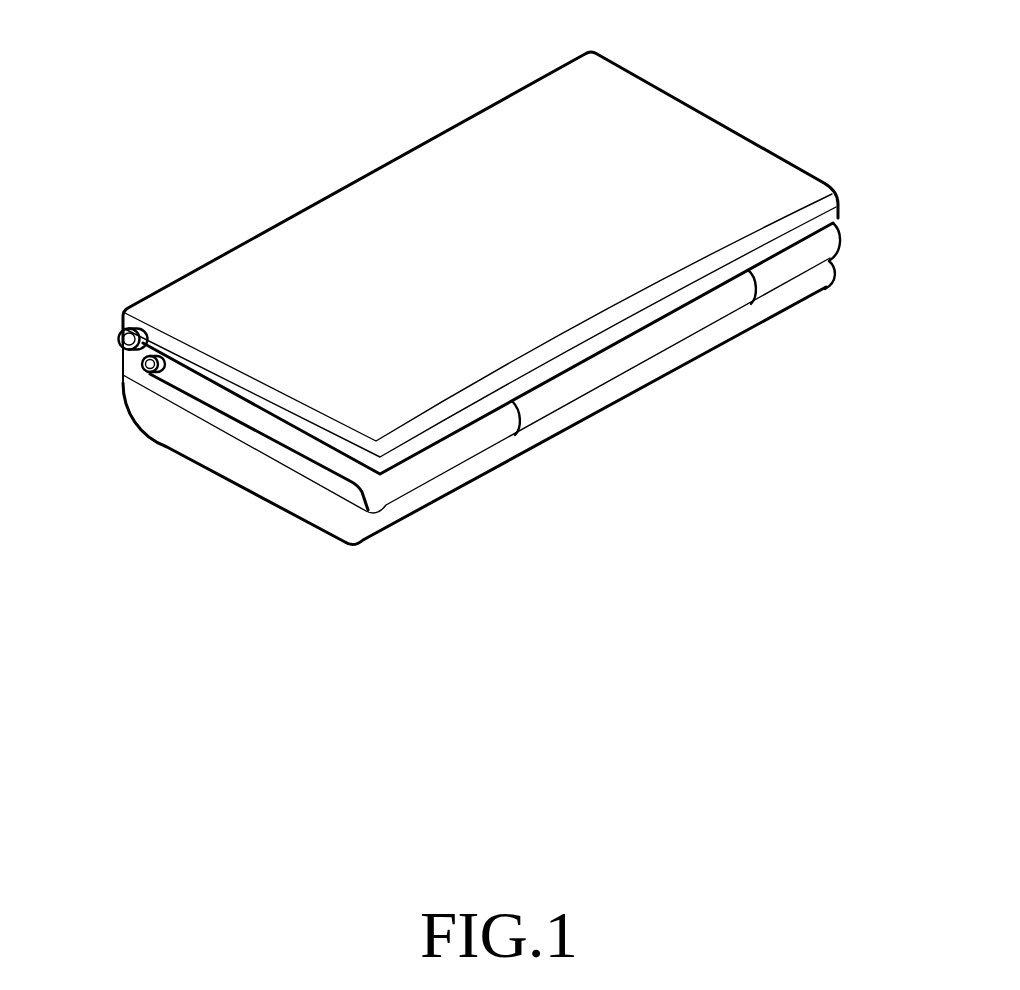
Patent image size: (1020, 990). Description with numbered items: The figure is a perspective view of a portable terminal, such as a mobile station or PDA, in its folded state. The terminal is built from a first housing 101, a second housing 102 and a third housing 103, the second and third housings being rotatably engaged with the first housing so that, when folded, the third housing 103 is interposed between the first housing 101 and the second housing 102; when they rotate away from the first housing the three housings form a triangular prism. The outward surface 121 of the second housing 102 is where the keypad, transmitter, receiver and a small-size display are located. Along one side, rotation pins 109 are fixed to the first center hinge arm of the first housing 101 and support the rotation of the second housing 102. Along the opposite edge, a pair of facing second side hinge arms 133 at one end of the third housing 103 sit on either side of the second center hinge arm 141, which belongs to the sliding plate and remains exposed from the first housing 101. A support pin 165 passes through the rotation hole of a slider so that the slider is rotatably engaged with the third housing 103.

The first housing 101 is at (241, 489).
The second housing 102 is at (490, 240).
The third housing 103 is at (243, 401).
The rotation pins 109 is at (118, 339).
The surface 121 is at (665, 118).
The second side hinge arms 133 is at (457, 452).
The second center hinge arm 141 is at (610, 367).
The support pin 165 is at (143, 364).